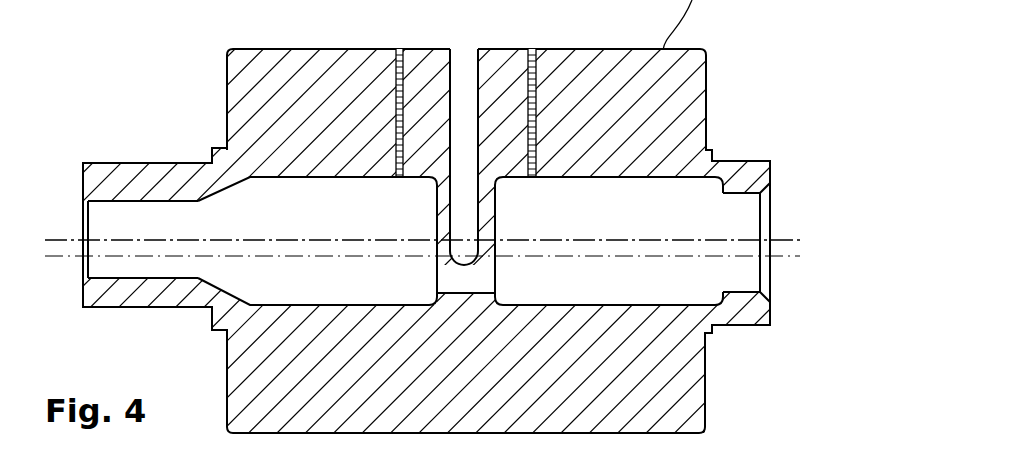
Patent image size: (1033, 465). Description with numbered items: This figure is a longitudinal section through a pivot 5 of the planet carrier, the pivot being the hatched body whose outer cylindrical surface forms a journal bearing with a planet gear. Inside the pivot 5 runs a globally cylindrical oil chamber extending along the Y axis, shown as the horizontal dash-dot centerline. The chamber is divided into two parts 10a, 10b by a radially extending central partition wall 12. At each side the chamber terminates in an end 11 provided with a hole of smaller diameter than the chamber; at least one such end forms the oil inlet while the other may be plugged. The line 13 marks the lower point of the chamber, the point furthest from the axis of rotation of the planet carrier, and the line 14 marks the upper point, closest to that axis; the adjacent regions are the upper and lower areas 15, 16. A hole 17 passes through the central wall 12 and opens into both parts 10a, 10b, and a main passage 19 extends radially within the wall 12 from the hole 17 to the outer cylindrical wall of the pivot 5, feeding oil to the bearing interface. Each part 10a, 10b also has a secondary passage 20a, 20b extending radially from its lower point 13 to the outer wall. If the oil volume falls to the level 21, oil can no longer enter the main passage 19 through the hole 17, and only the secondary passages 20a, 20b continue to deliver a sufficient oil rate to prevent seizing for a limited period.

The pivot 5 is at (682, 65).
The first part of the chamber 10a is at (277, 197).
The second part of the chamber 10b is at (667, 197).
The chamber end 11 is at (117, 219).
The central partition wall 12 is at (443, 222).
The lower point of the chamber 13 is at (578, 182).
The upper point of the chamber 14 is at (581, 302).
The upper area 15 is at (613, 202).
The lower area 16 is at (611, 288).
The hole 17 is at (458, 284).
The main passage 19 is at (467, 70).
The first secondary passage 20a is at (400, 95).
The second secondary passage 20b is at (533, 72).
The oil level 21 is at (788, 259).
The Y axis Y is at (63, 240).